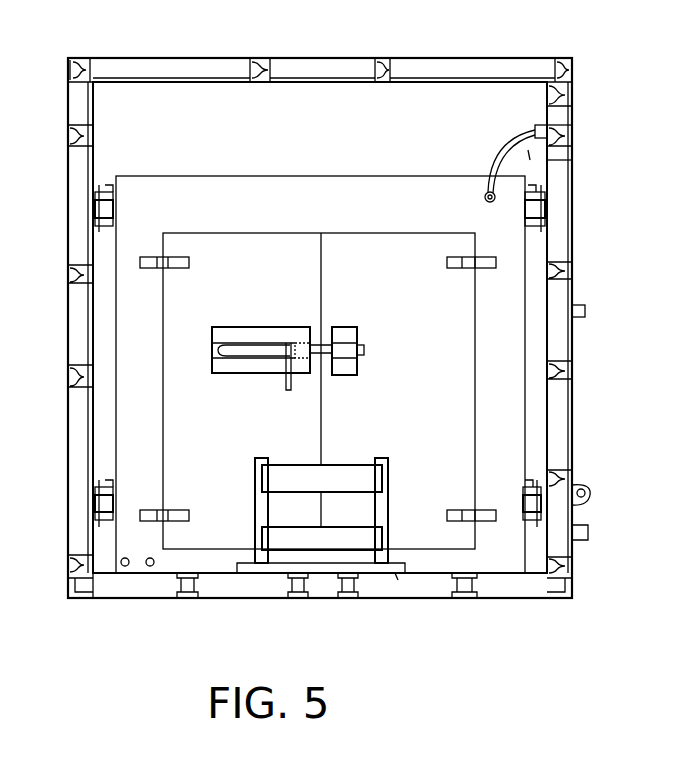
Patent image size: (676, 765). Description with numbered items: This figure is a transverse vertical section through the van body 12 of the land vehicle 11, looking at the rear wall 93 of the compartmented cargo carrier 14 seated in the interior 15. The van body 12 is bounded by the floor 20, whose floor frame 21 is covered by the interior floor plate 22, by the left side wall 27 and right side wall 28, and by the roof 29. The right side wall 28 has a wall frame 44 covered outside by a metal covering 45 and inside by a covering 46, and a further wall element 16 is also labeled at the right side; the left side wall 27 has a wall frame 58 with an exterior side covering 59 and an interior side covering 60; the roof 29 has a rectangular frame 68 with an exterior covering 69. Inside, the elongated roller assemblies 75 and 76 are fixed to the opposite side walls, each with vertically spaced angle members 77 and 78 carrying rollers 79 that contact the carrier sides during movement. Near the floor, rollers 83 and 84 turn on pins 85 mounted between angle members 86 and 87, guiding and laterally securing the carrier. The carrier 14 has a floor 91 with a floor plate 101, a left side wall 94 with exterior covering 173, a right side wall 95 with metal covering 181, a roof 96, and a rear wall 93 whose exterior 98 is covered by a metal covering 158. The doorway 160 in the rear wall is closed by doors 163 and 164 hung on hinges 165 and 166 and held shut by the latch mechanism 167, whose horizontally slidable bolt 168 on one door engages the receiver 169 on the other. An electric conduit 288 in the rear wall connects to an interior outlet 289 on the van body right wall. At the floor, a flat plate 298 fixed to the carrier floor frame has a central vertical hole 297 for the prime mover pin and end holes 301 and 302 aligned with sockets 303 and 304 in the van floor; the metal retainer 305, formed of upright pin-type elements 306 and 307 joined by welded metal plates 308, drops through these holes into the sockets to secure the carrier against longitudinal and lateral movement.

The land vehicle 11 is at (575, 87).
The van body 12 is at (400, 61).
The cargo carrier 14 is at (210, 179).
The interior 15 is at (117, 80).
The frame extrusion 16 is at (575, 110).
The floor 20 is at (537, 596).
The floor frame 21 is at (478, 596).
The interior floor plate 22 is at (113, 576).
The left side wall 27 is at (67, 165).
The right side wall 28 is at (575, 144).
The roof 29 is at (469, 62).
The wall frame 44 is at (575, 266).
The metal covering 45 is at (575, 180).
The covering 46 is at (526, 159).
The wall frame 58 is at (100, 121).
The exterior side covering 59 is at (67, 92).
The interior side covering 60 is at (100, 105).
The rectangular frame 68 is at (245, 78).
The exterior covering 69 is at (290, 61).
The roller assembly 75 is at (116, 211).
The roller assembly 76 is at (524, 221).
The angle member 77 is at (108, 189).
The angle member 78 is at (100, 229).
The rollers 79 is at (116, 201).
The roller 83 is at (115, 499).
The roller 84 is at (522, 499).
The pin 85 is at (114, 512).
The angle member 86 is at (107, 486).
The angle member 87 is at (107, 523).
The floor 91 is at (182, 553).
The rear wall 93 is at (276, 183).
The left side wall 94 is at (116, 349).
The right side wall 95 is at (527, 357).
The roof 96 is at (345, 181).
The exterior 98 is at (380, 181).
The floor plate 101 is at (183, 581).
The metal covering 158 is at (470, 186).
The doorway 160 is at (365, 235).
The door 163 is at (278, 235).
The door 164 is at (452, 235).
The hinge 165 is at (188, 269).
The hinge 166 is at (448, 269).
The latch mechanism 167 is at (252, 377).
The bolt 168 is at (364, 351).
The receiver 169 is at (360, 336).
The covering 173 is at (116, 303).
The metal covering 181 is at (530, 309).
The electric conduit 288 is at (512, 138).
The interior outlet 289 is at (535, 128).
The vertical hole 297 is at (330, 562).
The flat plate 298 is at (418, 576).
The hole 301 is at (275, 596).
The hole 302 is at (398, 560).
The socket 303 is at (312, 579).
The socket 304 is at (385, 596).
The metal retainer 305 is at (275, 466).
The pin-type element 306 is at (256, 458).
The pin-type element 307 is at (374, 458).
The metal plates 308 is at (276, 528).